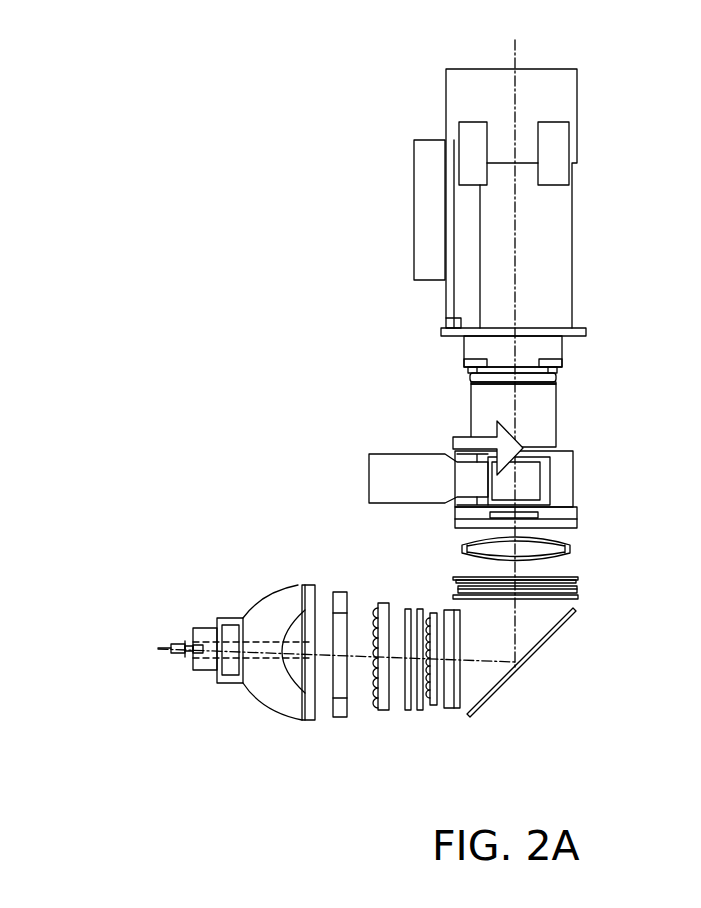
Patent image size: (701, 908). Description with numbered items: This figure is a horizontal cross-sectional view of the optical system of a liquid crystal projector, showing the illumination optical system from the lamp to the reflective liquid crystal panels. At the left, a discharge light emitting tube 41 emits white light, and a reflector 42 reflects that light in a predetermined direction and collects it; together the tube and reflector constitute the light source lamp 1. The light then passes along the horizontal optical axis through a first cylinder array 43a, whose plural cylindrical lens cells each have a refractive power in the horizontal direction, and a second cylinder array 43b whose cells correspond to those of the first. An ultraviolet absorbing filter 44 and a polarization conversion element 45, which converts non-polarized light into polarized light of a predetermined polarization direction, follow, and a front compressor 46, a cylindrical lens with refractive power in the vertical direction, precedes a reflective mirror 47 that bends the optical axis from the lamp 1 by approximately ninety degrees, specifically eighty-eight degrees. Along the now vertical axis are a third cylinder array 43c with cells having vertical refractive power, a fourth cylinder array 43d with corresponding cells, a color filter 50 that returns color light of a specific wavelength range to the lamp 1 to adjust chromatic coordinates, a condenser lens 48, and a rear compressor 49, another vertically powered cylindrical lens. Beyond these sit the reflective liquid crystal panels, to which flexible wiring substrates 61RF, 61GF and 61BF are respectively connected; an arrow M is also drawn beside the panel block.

The light source lamp 1 is at (268, 606).
The discharge light emitting tube 41 is at (258, 640).
The reflector 42 is at (277, 695).
The first cylinder array 43a is at (377, 710).
The second cylinder array 43b is at (421, 710).
The third cylinder array 43c is at (578, 598).
The fourth cylinder array 43d is at (578, 580).
The ultraviolet absorbing filter 44 is at (406, 710).
The polarization conversion element 45 is at (434, 705).
The front compressor 46 is at (455, 708).
The reflective mirror 47 is at (513, 670).
The condenser lens 48 is at (570, 547).
The rear compressor 49 is at (568, 520).
The color filter 50 is at (578, 590).
The flexible wiring substrate 61GF is at (468, 373).
The flexible wiring substrate 61BF is at (370, 451).
The flexible wiring substrate 61RF is at (452, 514).
The movement direction M is at (453, 442).